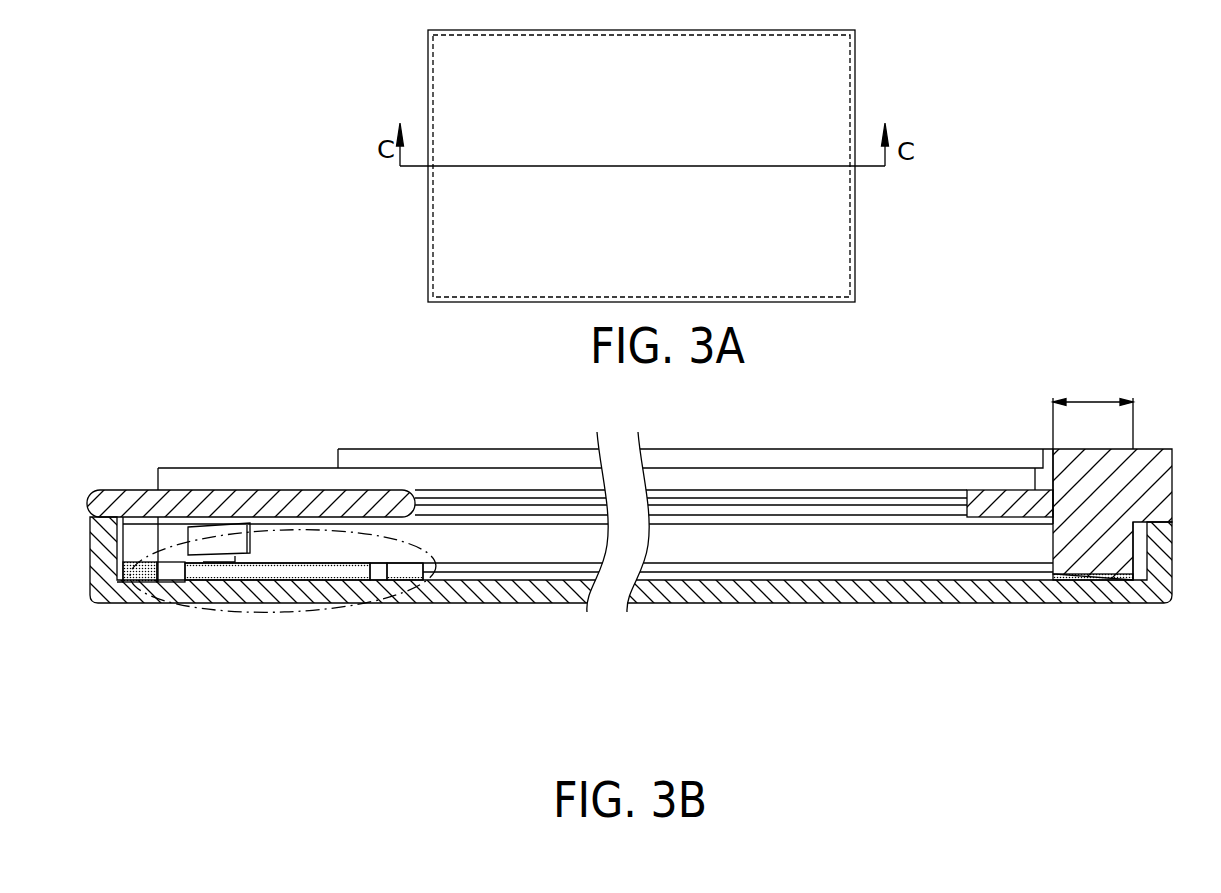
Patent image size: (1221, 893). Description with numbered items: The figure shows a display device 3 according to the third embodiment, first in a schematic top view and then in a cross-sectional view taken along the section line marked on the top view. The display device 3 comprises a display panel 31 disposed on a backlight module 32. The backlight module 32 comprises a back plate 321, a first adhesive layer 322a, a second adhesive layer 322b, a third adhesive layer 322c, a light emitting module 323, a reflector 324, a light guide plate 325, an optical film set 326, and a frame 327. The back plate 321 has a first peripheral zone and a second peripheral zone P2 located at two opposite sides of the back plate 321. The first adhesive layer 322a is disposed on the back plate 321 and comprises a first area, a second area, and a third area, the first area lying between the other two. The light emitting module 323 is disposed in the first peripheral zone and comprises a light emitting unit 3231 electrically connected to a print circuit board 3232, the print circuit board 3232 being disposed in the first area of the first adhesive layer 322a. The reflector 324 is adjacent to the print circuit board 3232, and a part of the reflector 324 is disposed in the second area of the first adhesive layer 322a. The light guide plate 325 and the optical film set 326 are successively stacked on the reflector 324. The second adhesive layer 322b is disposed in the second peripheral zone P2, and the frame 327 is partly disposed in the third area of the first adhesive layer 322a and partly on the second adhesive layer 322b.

In FIG. 3A, the display device 3 is at (175, 68).
In FIG. 3B, the display device 3 is at (88, 372).
In FIG. 3B, the display panel 31 is at (864, 483).
In FIG. 3B, the backlight module 32 is at (610, 561).
In FIG. 3B, the back plate 321 is at (680, 598).
In FIG. 3B, the first adhesive layer 322a is at (170, 578).
In FIG. 3B, the second adhesive layer 322b is at (1092, 576).
In FIG. 3B, the third adhesive layer 322c is at (283, 566).
In FIG. 3B, the light emitting module 323 is at (149, 613).
In FIG. 3B, the light emitting unit 3231 is at (128, 573).
In FIG. 3B, the print circuit board 3232 is at (156, 572).
In FIG. 3B, the reflector 324 is at (765, 568).
In FIG. 3B, the light guide plate 325 is at (855, 540).
In FIG. 3B, the optical film set 326 is at (918, 505).
In FIG. 3B, the frame 327 is at (1073, 552).
In FIG. 3B, the second peripheral zone P2 is at (1093, 409).